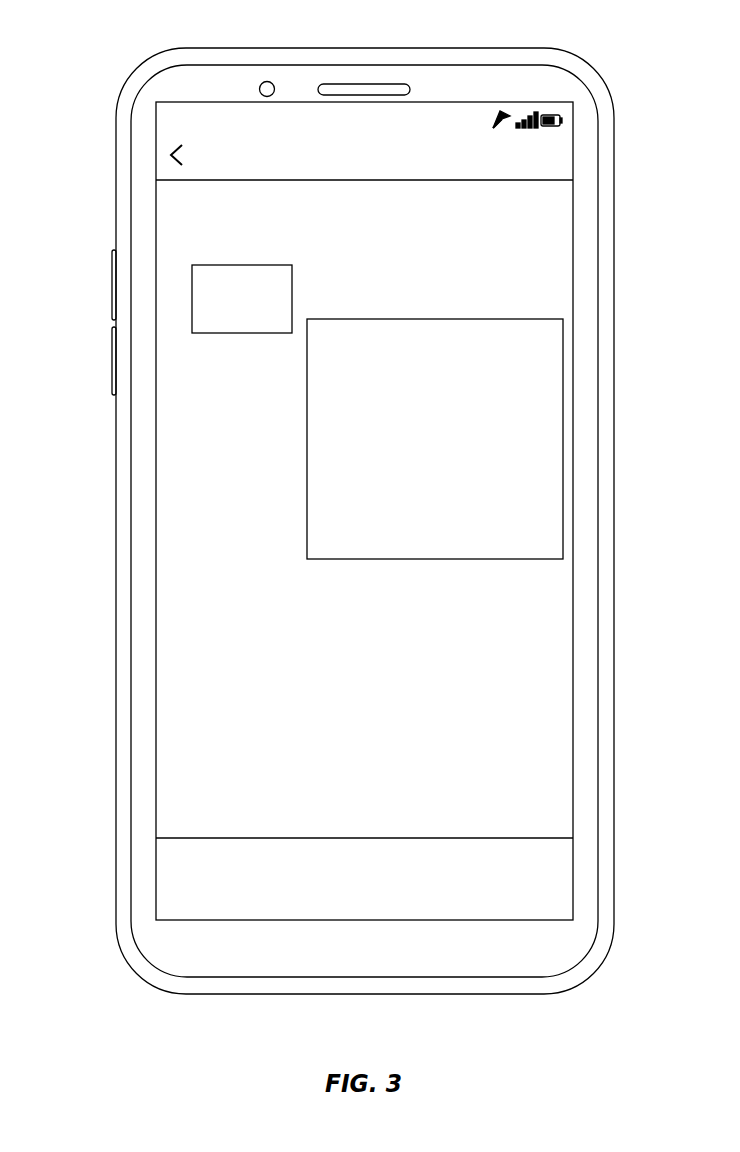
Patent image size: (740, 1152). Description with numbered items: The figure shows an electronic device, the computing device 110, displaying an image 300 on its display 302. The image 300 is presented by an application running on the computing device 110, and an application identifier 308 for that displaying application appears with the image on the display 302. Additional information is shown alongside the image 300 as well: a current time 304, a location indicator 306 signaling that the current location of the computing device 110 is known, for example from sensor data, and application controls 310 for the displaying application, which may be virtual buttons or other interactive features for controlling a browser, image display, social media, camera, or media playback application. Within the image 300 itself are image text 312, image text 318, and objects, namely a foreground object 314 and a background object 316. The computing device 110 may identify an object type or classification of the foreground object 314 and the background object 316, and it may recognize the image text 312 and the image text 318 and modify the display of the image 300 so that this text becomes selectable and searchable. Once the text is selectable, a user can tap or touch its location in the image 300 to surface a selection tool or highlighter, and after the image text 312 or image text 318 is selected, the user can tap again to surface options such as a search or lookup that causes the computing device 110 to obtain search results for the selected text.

The computing device 110 is at (129, 108).
The image 300 is at (543, 196).
The display 302 is at (574, 145).
The current time 304 is at (178, 101).
The location indicator 306 is at (507, 118).
The application identifier 308 is at (434, 130).
The application controls 310 is at (500, 856).
The image text 312 is at (452, 243).
The foreground object 314 is at (307, 443).
The background object 316 is at (293, 302).
The image text 318 is at (280, 757).